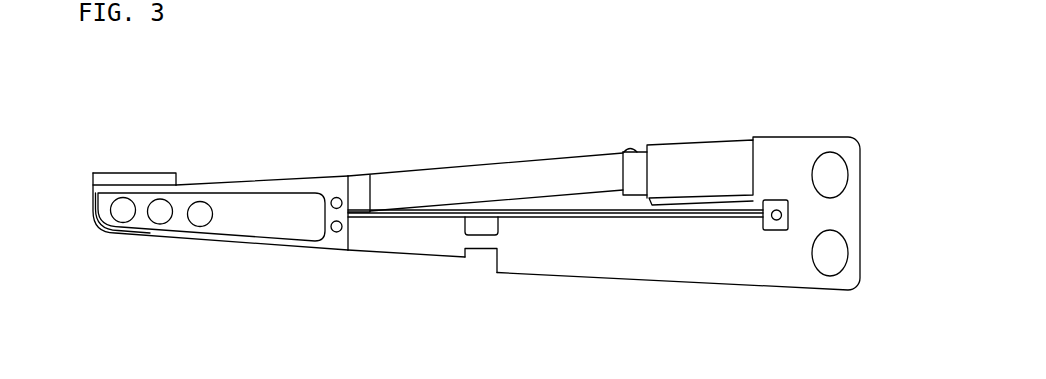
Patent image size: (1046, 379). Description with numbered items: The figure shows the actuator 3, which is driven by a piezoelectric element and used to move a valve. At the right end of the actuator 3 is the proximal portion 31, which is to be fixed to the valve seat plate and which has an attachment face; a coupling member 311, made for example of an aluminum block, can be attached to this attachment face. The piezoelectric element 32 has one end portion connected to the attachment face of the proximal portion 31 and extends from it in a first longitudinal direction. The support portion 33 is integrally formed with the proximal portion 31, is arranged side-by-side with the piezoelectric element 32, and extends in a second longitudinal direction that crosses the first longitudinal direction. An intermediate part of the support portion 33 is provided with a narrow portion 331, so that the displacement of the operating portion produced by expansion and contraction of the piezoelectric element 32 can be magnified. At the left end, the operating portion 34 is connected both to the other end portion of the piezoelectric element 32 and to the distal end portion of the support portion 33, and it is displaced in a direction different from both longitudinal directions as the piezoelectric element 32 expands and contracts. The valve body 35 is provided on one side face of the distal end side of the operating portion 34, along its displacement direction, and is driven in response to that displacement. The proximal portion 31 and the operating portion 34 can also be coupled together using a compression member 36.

The actuator 3 is at (367, 89).
The proximal portion 31 is at (843, 214).
The coupling member 311 is at (698, 158).
The piezoelectric element 32 is at (500, 177).
The support portion 33 is at (543, 263).
The narrow portion 331 is at (485, 245).
The operating portion 34 is at (227, 227).
The valve body 35 is at (134, 181).
The compression member 36 is at (701, 219).